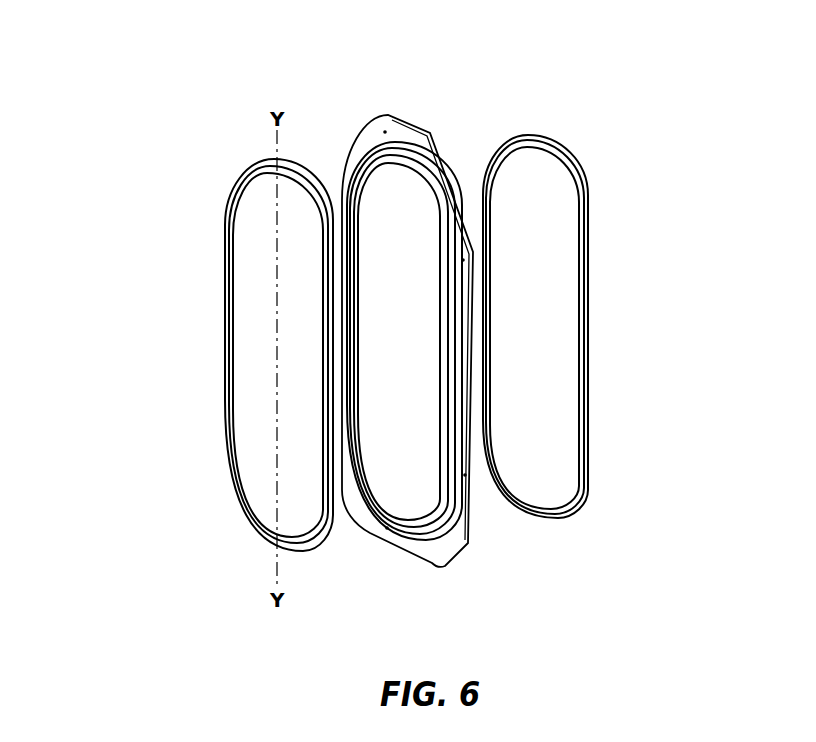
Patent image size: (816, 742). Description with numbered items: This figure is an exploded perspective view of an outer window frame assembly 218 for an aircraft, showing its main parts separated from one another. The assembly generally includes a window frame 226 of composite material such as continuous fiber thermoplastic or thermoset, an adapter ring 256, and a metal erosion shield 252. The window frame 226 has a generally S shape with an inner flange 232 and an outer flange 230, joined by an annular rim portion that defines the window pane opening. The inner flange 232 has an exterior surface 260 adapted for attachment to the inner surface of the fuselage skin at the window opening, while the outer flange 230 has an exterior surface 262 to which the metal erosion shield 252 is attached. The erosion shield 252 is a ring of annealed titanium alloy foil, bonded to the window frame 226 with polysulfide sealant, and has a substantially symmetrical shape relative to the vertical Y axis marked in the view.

The window frame assembly 218 is at (183, 140).
The window frame 226 is at (430, 340).
The outer flange 230 is at (420, 527).
The inner flange 232 is at (450, 545).
The metal erosion shield 252 is at (225, 307).
The adapter ring 256 is at (585, 243).
The exterior surface 260 is at (371, 140).
The exterior surface 262 is at (375, 508).